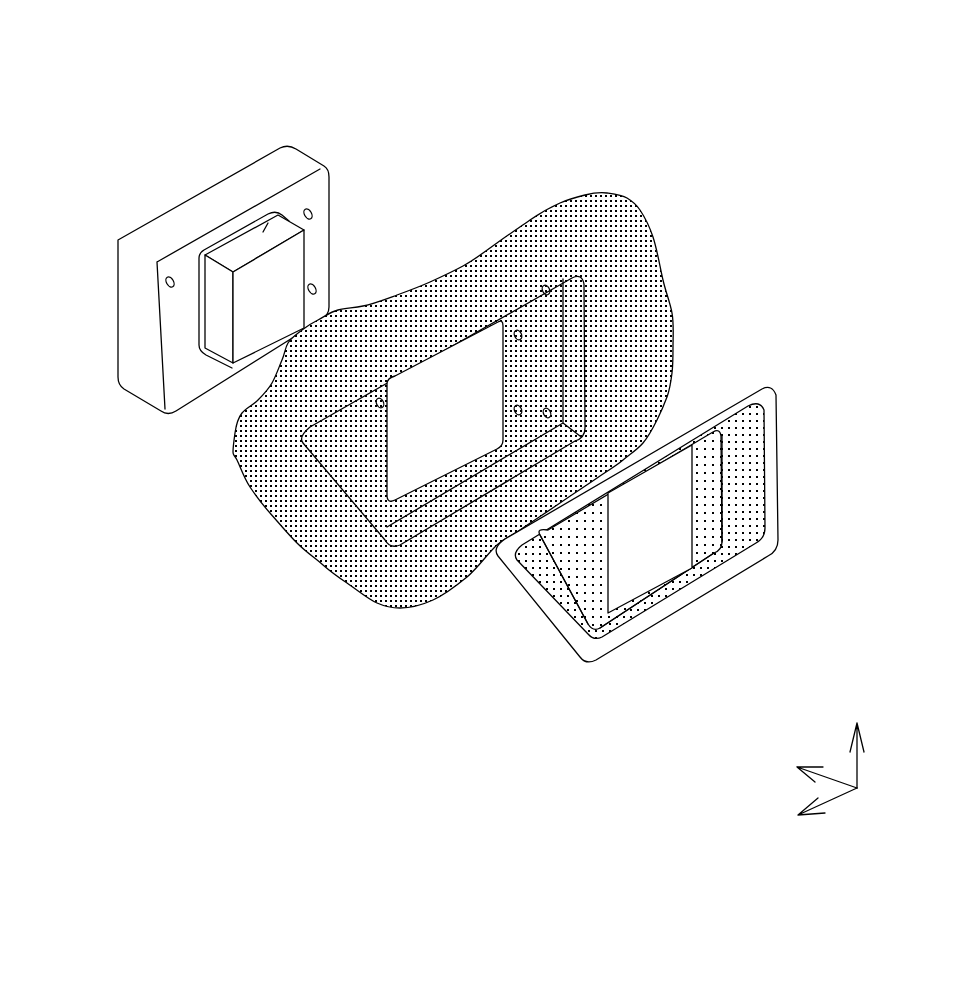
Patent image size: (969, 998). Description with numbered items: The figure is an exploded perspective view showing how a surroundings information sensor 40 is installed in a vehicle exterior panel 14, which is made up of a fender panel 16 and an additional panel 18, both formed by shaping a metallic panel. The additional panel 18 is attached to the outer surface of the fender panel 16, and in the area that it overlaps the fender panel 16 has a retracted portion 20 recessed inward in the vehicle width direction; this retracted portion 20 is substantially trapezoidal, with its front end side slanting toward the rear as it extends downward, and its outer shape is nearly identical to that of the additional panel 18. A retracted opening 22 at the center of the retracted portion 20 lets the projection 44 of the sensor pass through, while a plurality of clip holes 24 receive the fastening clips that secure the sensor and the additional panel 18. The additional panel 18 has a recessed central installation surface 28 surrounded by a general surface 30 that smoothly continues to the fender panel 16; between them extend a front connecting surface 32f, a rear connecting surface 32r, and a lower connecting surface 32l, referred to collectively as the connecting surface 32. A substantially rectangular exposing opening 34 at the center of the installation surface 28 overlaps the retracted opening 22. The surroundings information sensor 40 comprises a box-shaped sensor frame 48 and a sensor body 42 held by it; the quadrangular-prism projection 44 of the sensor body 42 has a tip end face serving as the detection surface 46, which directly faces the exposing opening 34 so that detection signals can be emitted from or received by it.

The exterior panel 14 is at (718, 160).
The fender panel 16 is at (543, 202).
The additional panel 18 is at (700, 606).
The retracted portion 20 is at (353, 447).
The retracted opening 22 is at (388, 462).
The clip holes 24 is at (523, 334).
The installation surface 28 is at (575, 552).
The general surface 30 is at (603, 218).
The connecting surface 32 is at (605, 630).
The front connecting surface 32f is at (573, 607).
The lower connecting surface 32l is at (722, 563).
The rear connecting surface 32r is at (753, 493).
The exposing opening 34 is at (692, 532).
The surroundings information sensor 40 is at (191, 177).
The sensor body 42 is at (285, 268).
The projection 44 is at (263, 232).
The detection surface 46 is at (251, 290).
The sensor frame 48 is at (138, 330).